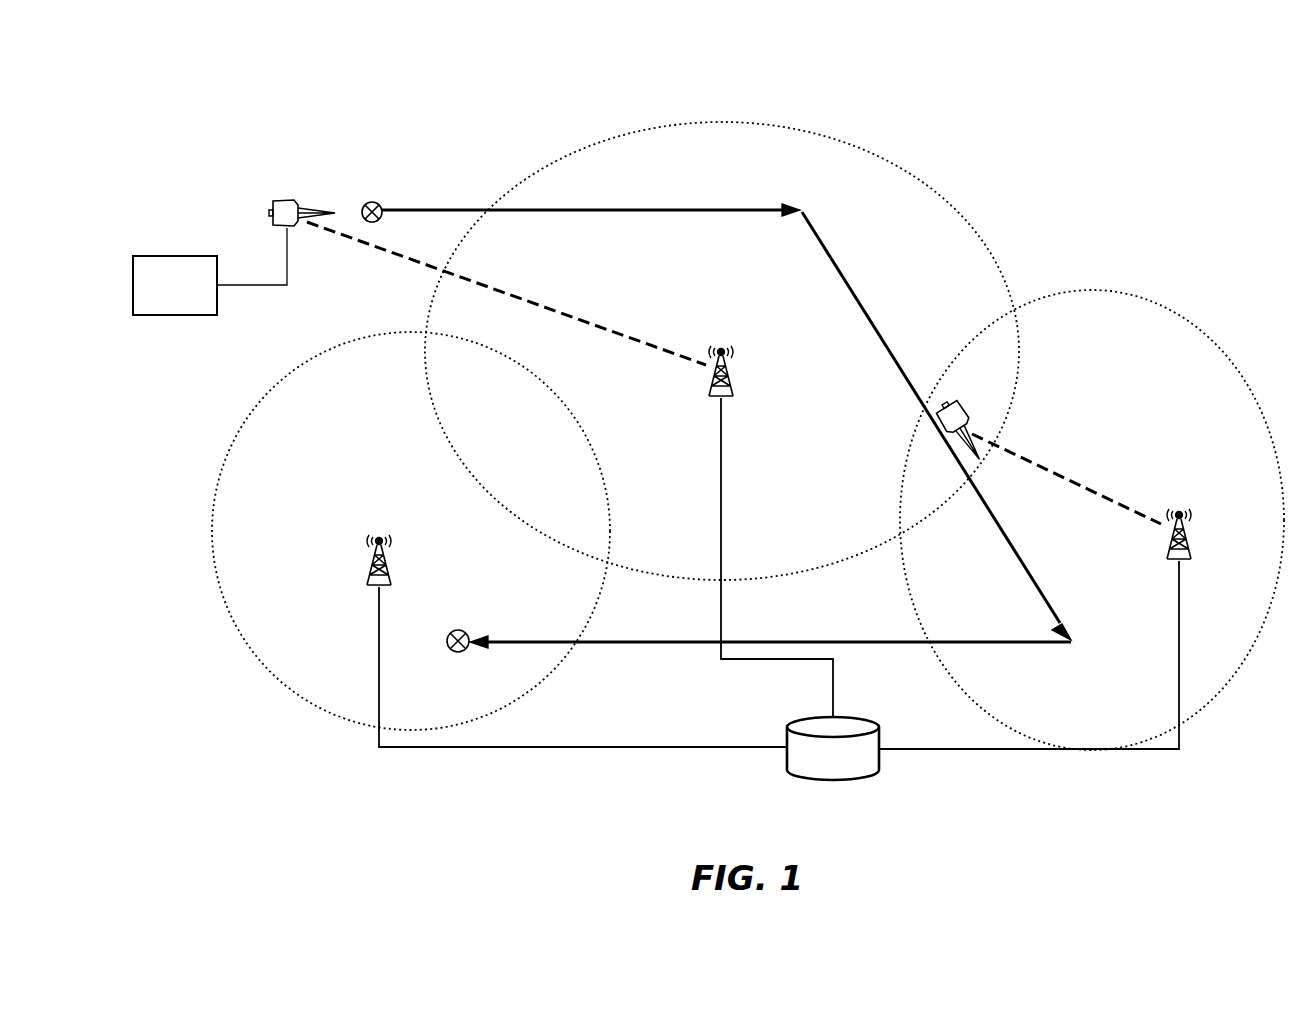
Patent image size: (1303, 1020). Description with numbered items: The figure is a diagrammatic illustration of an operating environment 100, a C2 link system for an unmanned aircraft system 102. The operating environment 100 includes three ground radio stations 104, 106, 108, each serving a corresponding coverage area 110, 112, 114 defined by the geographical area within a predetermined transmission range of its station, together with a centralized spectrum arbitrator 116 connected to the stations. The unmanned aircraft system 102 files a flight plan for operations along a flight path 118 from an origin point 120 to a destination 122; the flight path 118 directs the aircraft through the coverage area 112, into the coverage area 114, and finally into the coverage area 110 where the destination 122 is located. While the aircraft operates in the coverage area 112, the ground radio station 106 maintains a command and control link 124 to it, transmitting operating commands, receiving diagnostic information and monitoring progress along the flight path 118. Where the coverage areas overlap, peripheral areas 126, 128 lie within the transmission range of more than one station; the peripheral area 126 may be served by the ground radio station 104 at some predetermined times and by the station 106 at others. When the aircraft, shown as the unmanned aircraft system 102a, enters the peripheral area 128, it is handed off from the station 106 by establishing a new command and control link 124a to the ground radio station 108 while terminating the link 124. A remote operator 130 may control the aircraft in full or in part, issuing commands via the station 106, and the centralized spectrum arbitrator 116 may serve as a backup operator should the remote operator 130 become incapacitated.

The operating environment 100 is at (188, 124).
The unmanned aircraft system 102 is at (287, 199).
The unmanned aircraft system within the peripheral area 102a is at (965, 412).
The ground radio station 104 is at (371, 564).
The ground radio station 106 is at (728, 377).
The ground radio station 108 is at (1187, 543).
The coverage area 110 is at (316, 419).
The coverage area 112 is at (881, 250).
The coverage area 114 is at (1068, 714).
The centralized spectrum arbitrator 116 is at (814, 771).
The flight path 118 is at (448, 208).
The origin point 120 is at (372, 201).
The destination 122 is at (453, 653).
The command and control link 124 is at (597, 326).
The new command and control link 124a is at (1080, 485).
The peripheral area 126 is at (483, 433).
The peripheral area 128 is at (995, 359).
The remote operator 130 is at (156, 301).